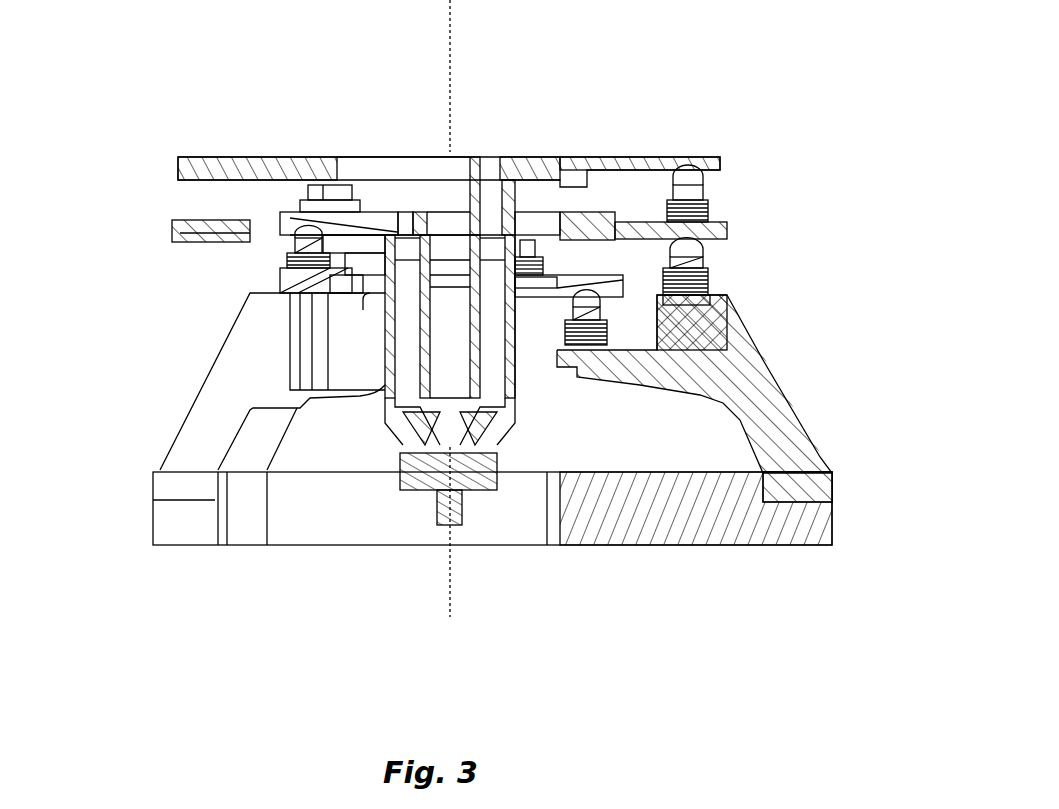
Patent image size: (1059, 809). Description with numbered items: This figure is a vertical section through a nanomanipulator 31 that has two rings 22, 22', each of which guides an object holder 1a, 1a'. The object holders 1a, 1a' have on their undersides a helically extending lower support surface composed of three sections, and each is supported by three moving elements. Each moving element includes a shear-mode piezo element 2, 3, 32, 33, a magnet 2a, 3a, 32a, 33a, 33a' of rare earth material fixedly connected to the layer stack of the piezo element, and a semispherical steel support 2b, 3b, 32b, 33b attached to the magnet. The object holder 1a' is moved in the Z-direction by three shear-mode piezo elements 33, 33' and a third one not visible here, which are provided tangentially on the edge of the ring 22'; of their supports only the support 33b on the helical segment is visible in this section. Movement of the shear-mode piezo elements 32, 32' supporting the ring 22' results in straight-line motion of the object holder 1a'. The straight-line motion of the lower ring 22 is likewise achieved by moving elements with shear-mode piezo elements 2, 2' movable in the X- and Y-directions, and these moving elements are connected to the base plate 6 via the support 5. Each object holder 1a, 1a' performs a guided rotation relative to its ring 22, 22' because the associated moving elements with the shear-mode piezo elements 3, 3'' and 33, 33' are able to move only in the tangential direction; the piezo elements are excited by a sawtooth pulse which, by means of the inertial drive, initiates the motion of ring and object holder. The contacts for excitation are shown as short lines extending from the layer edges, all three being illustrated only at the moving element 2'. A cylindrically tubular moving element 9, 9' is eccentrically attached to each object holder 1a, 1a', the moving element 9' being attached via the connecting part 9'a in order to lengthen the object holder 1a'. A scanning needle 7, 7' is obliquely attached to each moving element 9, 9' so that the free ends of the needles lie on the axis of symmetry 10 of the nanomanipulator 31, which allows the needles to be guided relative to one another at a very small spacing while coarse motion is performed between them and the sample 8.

The nanomanipulator 31 is at (708, 84).
The object holder 1a' is at (503, 121).
The connecting part 9'a is at (439, 157).
The object holder 1a is at (587, 205).
The semispherical support 33b is at (705, 178).
The magnet 33a is at (757, 182).
The shear-mode piezo element 33 is at (747, 207).
The ring 22' is at (721, 233).
The semispherical support 32b is at (706, 250).
The magnet 32a is at (706, 259).
The shear-mode piezo element 32 is at (765, 289).
The ring 22 is at (748, 315).
The semispherical support 2b is at (607, 304).
The magnet 2a is at (604, 315).
The shear-mode piezo element 2 is at (711, 347).
The cylindrically tubular moving element 9' is at (675, 319).
The support 5 is at (805, 425).
The base plate 6 is at (698, 547).
The axis of symmetry 10 is at (445, 548).
The scanning needle 7 is at (377, 430).
The scanning needle 7' is at (524, 429).
The sample 8 is at (398, 459).
The cylindrically tubular moving element 9 is at (293, 352).
The shear-mode piezo element 2' is at (282, 317).
The shear-mode piezo element 32' is at (230, 316).
The shear-mode piezo element 3 is at (192, 286).
The magnet 3a is at (289, 247).
The semispherical support 3b is at (292, 231).
The shear-mode piezo element 33' is at (231, 200).
The magnet 33a' is at (223, 183).
The shear-mode piezo element 3'' is at (572, 268).